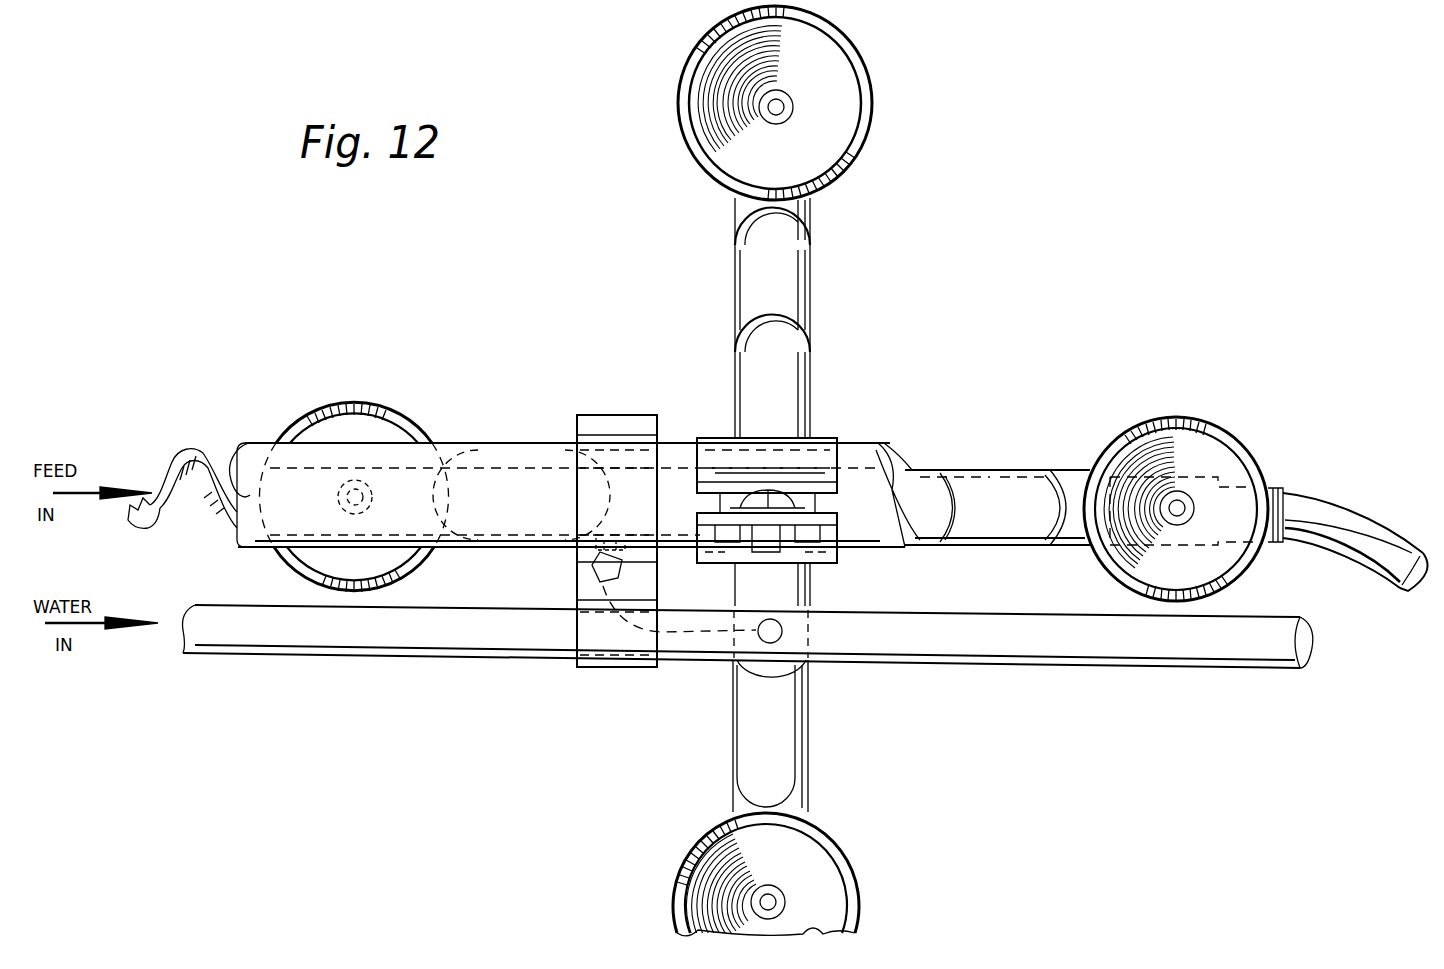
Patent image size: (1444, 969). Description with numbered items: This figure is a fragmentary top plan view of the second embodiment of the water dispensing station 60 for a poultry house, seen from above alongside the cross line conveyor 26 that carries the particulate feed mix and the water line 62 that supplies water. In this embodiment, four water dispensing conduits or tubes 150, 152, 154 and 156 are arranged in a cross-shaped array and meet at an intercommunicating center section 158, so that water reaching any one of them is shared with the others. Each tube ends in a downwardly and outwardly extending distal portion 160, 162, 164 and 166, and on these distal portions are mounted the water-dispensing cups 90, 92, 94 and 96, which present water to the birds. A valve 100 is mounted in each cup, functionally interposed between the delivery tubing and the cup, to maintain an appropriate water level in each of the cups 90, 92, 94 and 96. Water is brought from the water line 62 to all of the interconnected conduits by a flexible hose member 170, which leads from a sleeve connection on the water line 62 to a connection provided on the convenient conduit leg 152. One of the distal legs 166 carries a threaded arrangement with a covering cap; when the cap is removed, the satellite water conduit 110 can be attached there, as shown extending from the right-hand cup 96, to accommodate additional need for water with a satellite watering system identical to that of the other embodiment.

The cross line conveyor 26 is at (262, 444).
The water dispensing station 60 is at (940, 278).
The water line 62 is at (447, 640).
The water-dispensing cup 90 is at (858, 868).
The water-dispensing cup 92 is at (402, 426).
The water-dispensing cup 94 is at (870, 118).
The water-dispensing cup 96 is at (1240, 438).
The valve 100 is at (784, 106).
The satellite water conduit 110 is at (1378, 536).
The water dispensing tube 150 is at (783, 740).
The water dispensing tube 152 is at (536, 548).
The water dispensing tube 154 is at (812, 378).
The water dispensing tube 156 is at (1006, 487).
The intercommunicating center section 158 is at (812, 592).
The distal portion 160 is at (812, 803).
The distal portion 162 is at (578, 440).
The distal portion 164 is at (806, 210).
The distal leg 166 is at (1074, 470).
The flexible hose member 170 is at (718, 597).